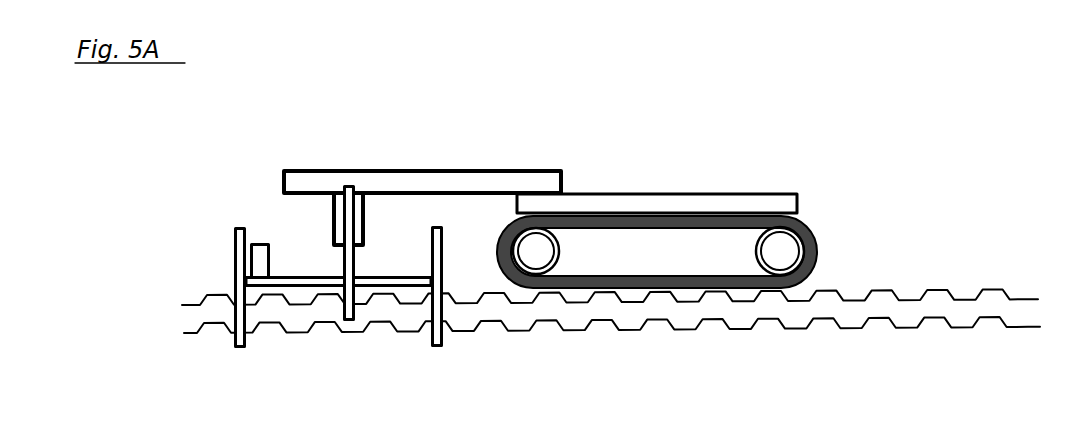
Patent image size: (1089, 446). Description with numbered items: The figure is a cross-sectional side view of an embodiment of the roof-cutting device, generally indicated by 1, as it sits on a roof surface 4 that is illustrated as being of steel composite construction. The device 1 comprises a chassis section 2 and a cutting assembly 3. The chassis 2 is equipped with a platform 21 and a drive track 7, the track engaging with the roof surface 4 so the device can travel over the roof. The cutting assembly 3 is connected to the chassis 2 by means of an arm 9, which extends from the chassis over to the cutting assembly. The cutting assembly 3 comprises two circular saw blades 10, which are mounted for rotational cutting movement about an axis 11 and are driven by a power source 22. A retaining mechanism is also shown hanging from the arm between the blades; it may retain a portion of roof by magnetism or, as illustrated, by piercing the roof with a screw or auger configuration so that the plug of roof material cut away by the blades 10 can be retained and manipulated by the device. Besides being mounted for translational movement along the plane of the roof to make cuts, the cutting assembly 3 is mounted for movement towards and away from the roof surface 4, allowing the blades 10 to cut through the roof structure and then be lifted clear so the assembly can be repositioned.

The device 1 is at (658, 97).
The chassis section 2 is at (675, 190).
The cutting assembly 3 is at (422, 177).
The roof surface 4 is at (877, 288).
The drive track 7 is at (798, 222).
The arm 9 is at (452, 175).
The circular saw blades 10 is at (233, 242).
The axis 11 is at (378, 272).
The platform 21 is at (708, 200).
The power source 22 is at (258, 250).